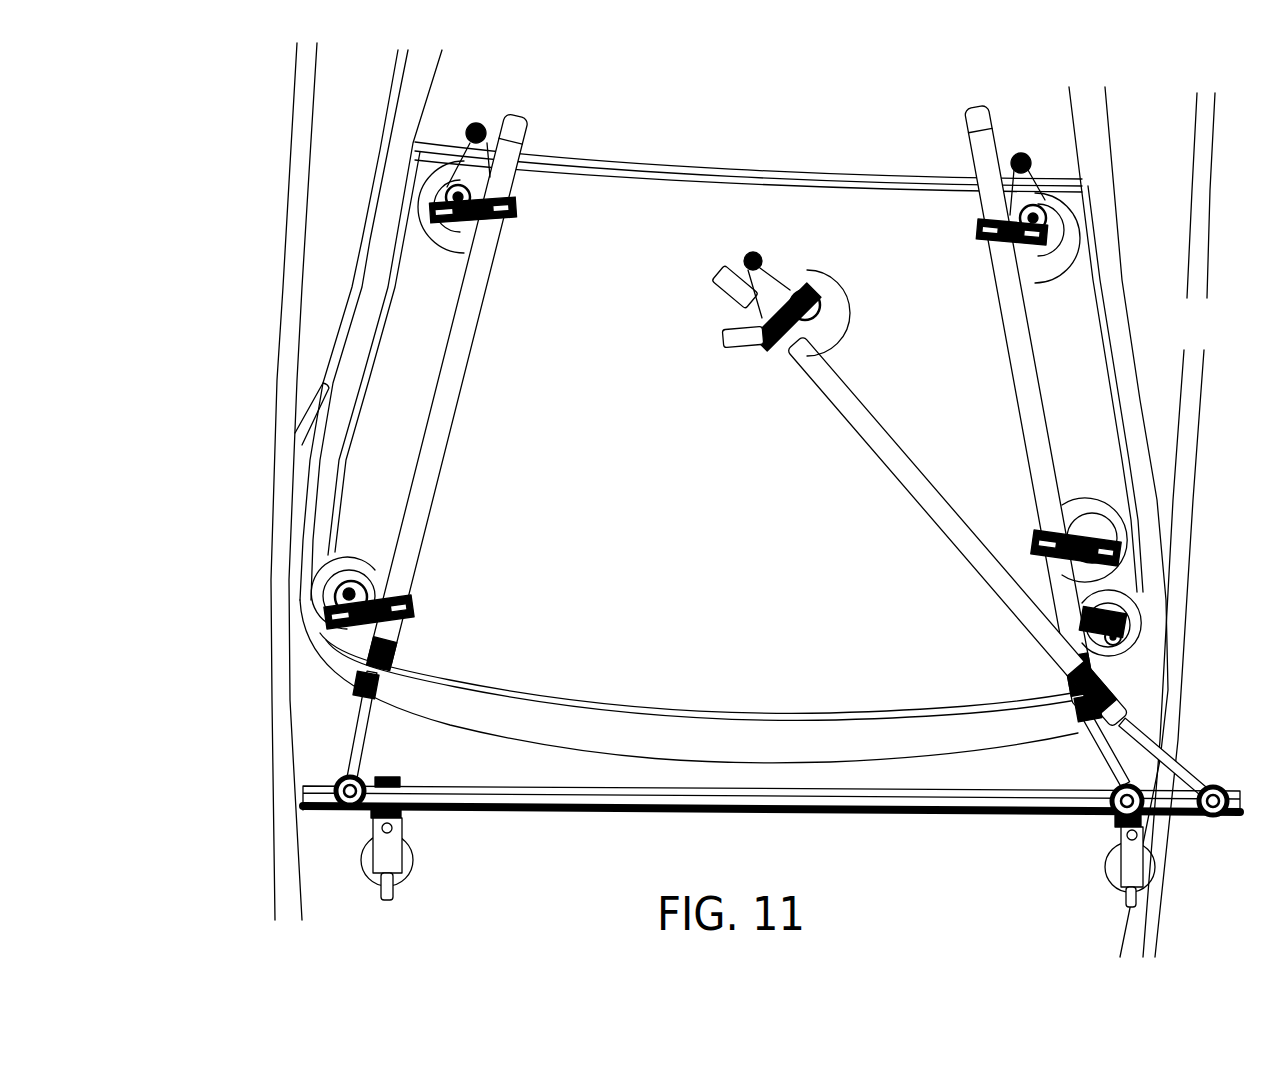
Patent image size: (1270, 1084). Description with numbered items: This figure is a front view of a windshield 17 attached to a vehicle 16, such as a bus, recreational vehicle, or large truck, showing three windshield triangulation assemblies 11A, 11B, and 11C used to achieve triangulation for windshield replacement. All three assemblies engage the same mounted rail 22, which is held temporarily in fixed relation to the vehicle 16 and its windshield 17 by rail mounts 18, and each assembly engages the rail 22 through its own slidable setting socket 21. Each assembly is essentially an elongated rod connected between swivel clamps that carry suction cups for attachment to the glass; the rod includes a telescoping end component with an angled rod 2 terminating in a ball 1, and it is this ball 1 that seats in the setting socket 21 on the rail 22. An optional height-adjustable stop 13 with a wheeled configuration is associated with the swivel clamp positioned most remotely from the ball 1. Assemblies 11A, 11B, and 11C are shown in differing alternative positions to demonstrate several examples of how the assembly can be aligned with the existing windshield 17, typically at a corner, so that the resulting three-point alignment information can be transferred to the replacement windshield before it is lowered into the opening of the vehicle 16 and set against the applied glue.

The ball 1 is at (281, 778).
The angled rod 2 is at (389, 722).
The windshield triangulation assembly 11A is at (478, 458).
The windshield triangulation assembly 11B is at (907, 548).
The windshield triangulation assembly 11C is at (1071, 339).
The height-adjustable stop 13 is at (500, 104).
The vehicle 16 is at (283, 470).
The windshield 17 is at (703, 220).
The rail mount 18 is at (444, 886).
The setting socket 21 is at (322, 802).
The rail 22 is at (932, 812).